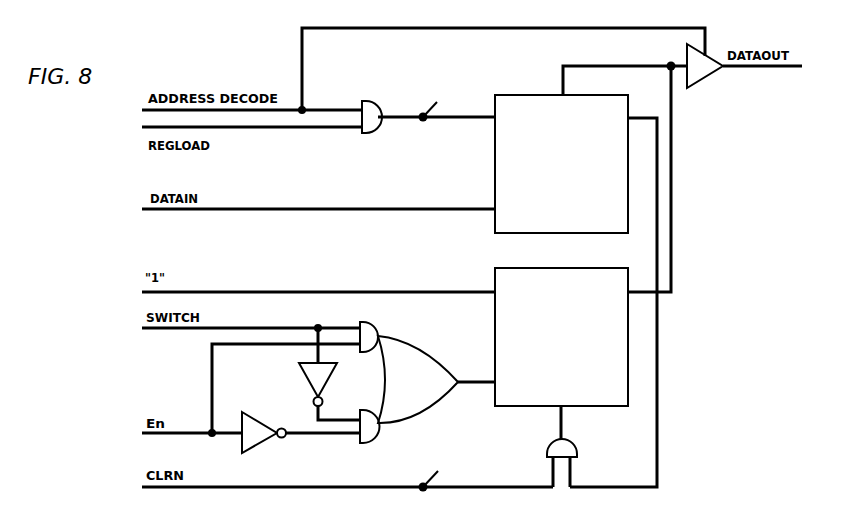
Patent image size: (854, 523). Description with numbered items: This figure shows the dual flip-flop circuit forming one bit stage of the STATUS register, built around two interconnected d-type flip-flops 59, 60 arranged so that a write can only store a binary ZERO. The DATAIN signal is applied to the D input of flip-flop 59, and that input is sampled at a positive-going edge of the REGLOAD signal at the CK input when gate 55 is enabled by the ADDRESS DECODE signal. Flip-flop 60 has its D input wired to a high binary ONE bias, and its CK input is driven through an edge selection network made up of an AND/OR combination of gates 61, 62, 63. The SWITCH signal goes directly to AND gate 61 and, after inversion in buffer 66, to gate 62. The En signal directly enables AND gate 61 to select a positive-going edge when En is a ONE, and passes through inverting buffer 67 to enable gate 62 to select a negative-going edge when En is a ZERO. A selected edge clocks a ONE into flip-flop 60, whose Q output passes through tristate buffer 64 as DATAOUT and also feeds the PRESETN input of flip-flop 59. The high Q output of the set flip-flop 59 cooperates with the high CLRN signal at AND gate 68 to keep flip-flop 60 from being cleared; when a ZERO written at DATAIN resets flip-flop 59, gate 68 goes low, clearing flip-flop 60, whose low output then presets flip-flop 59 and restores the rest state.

The gate 55 is at (366, 101).
The d-type flip-flop 59 is at (495, 155).
The d-type flip-flop 60 is at (495, 273).
The AND gate 61 is at (370, 322).
The gate 62 is at (372, 443).
The gate 63 is at (428, 348).
The tristate buffer 64 is at (699, 76).
The buffer 66 is at (312, 385).
The inverting buffer 67 is at (263, 407).
The AND gate 68 is at (573, 446).